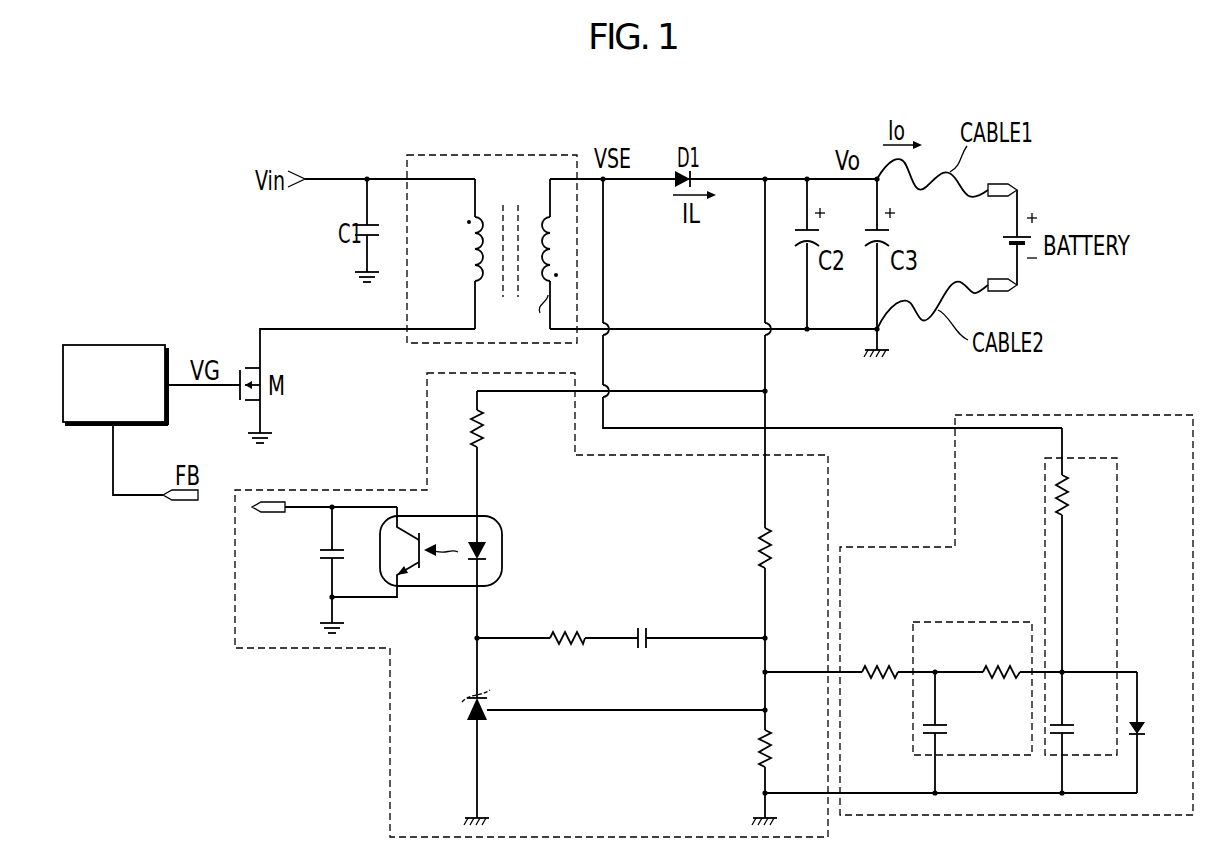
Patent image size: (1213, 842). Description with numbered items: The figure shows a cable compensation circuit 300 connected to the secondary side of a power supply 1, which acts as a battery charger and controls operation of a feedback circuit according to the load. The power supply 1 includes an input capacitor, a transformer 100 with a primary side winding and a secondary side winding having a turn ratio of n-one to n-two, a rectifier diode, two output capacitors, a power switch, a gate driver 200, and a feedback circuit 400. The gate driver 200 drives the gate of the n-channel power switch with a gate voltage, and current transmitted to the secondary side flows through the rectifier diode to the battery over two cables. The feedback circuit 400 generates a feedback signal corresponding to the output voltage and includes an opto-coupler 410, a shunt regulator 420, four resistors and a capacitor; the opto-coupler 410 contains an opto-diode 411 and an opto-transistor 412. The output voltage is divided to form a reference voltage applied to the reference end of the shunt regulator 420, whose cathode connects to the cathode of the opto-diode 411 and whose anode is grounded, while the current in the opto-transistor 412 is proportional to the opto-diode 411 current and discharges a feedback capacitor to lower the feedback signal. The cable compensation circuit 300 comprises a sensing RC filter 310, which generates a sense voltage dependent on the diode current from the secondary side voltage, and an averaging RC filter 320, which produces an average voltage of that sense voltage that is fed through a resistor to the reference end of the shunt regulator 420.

The power supply 1 is at (160, 128).
The transformer 100 is at (440, 155).
The gate driver 200 is at (140, 345).
The cable compensation circuit 300 is at (1160, 415).
The sensing RC filter 310 is at (1045, 528).
The averaging RC filter 320 is at (932, 622).
The feedback circuit 400 is at (279, 648).
The opto-coupler 410 is at (502, 531).
The opto-diode 411 is at (486, 554).
The opto-transistor 412 is at (412, 578).
The shunt regulator 420 is at (467, 716).